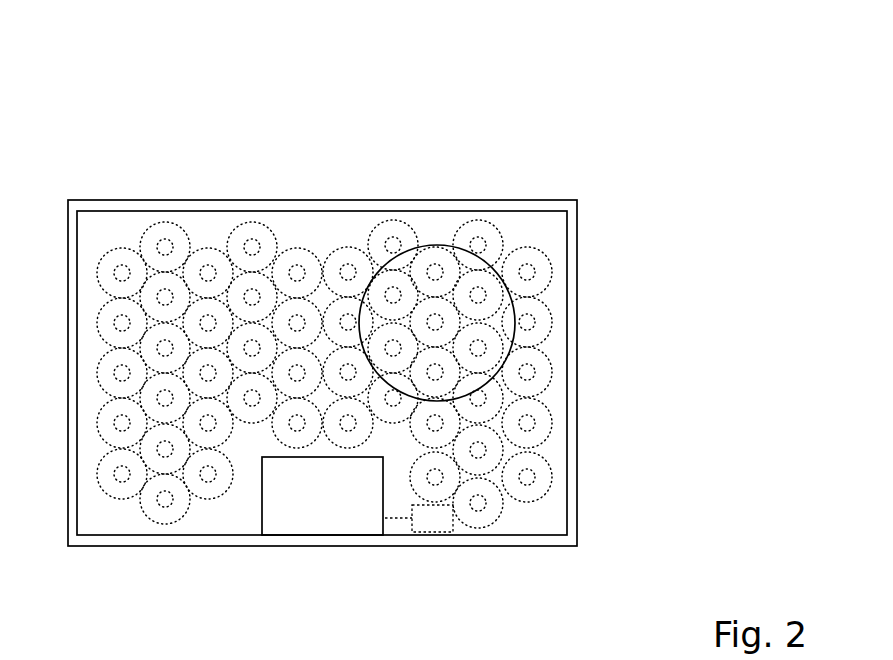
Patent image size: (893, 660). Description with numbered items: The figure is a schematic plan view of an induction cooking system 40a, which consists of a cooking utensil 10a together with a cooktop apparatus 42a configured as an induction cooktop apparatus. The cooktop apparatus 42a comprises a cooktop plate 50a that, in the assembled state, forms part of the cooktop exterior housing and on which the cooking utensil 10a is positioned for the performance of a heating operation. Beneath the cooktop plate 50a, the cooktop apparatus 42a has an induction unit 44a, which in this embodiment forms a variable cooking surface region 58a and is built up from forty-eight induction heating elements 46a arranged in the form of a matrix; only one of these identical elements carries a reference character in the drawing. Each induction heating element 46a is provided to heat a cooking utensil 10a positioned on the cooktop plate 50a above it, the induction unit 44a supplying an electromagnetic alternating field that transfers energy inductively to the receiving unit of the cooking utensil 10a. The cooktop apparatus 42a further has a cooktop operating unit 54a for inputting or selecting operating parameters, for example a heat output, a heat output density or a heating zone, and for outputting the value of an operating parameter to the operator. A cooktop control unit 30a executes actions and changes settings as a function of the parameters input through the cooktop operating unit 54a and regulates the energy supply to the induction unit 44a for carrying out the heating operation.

The cooking utensil 10a is at (514, 308).
The cooktop control unit 30a is at (433, 518).
The cooking system 40a is at (668, 128).
The cooktop apparatus 42a is at (622, 216).
The induction unit 44a is at (288, 168).
The induction heating element 46a is at (192, 236).
The cooktop plate 50a is at (433, 241).
The cooktop operating unit 54a is at (320, 515).
The variable cooking surface region 58a is at (212, 222).